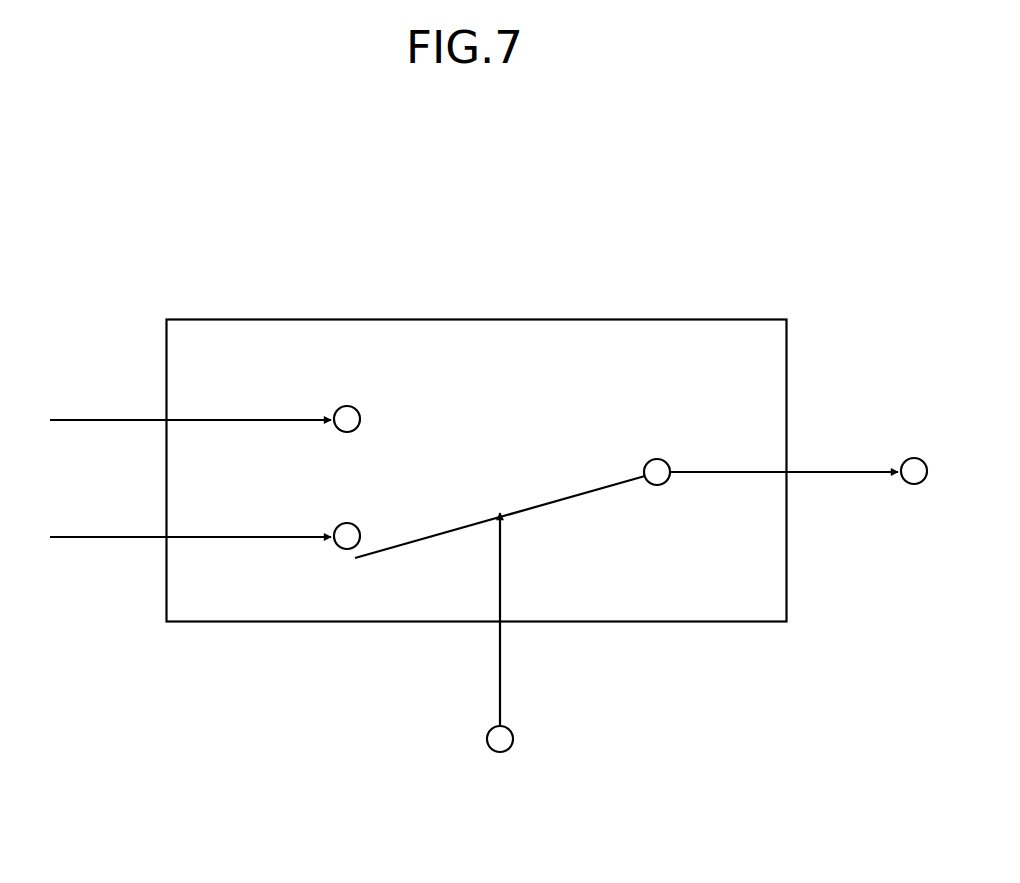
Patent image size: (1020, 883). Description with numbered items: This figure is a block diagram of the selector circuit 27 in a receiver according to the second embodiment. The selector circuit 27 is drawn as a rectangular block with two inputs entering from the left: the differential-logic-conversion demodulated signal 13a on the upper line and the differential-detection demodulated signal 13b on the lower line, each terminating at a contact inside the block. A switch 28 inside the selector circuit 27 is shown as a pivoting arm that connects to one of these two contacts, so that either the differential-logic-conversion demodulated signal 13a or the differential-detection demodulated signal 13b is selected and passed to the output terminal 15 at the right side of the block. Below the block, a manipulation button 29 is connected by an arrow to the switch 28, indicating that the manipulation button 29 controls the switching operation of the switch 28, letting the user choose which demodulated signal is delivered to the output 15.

The selector circuit 27 is at (477, 318).
The differential-logic-conversion demodulated signal 13a is at (101, 418).
The differential-detection demodulated signal 13b is at (110, 540).
The switch 28 is at (521, 509).
The output terminal 15 is at (909, 458).
The manipulation button 29 is at (514, 738).